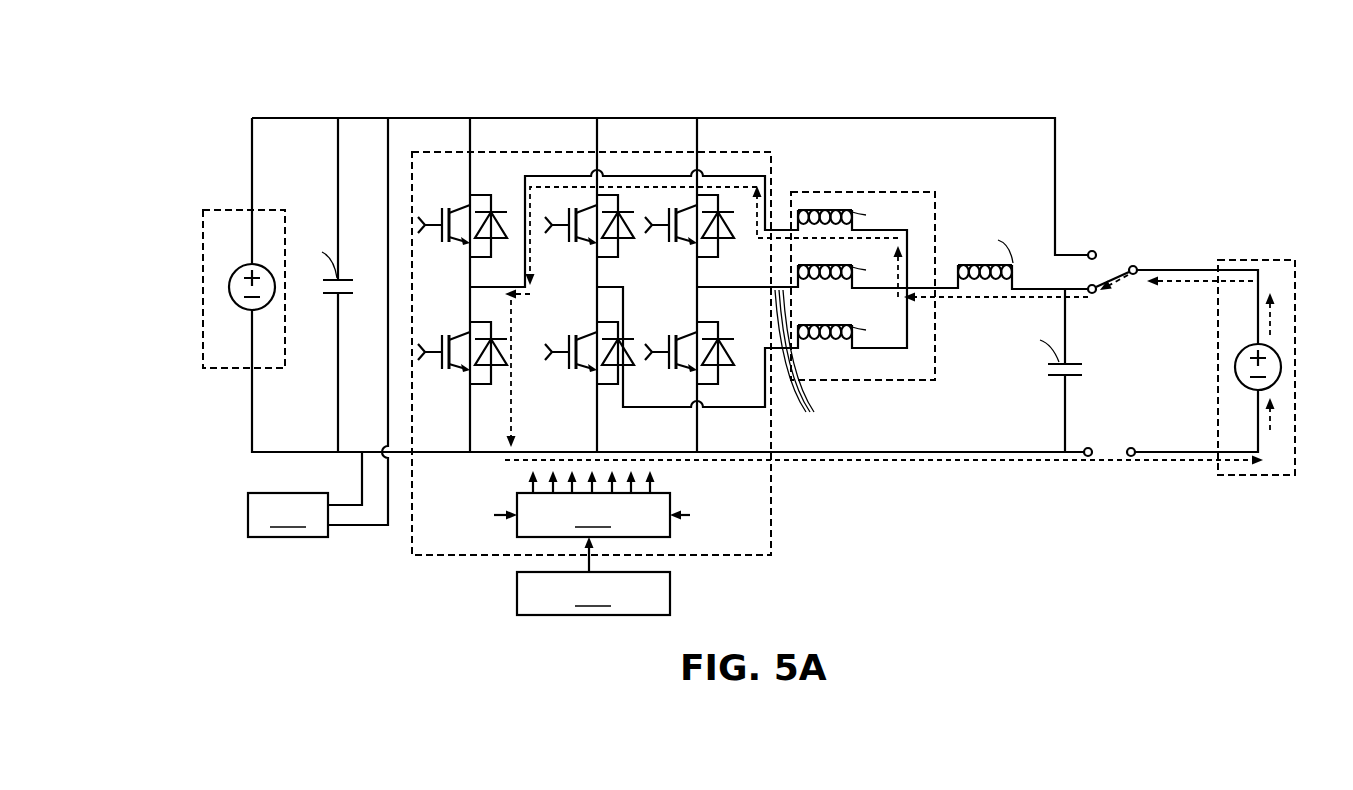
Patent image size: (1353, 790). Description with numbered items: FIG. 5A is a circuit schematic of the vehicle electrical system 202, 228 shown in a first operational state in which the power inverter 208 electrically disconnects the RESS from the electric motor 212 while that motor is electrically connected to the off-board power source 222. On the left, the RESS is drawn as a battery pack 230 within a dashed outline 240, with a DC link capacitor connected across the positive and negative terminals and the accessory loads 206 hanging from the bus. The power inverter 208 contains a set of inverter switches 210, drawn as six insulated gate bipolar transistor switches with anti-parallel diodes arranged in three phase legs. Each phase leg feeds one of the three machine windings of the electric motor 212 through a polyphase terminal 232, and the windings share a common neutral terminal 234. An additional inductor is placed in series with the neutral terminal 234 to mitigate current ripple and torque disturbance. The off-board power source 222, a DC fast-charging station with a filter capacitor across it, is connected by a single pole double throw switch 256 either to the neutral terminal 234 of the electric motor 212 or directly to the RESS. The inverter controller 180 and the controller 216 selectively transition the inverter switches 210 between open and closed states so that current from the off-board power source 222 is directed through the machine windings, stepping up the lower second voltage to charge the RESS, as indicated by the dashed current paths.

The vehicle electrical system 202 is at (737, 337).
The inverter-based motor drive / charger circuit 228 is at (374, 96).
The DC input source block 240 is at (203, 223).
The battery pack 230 is at (239, 275).
The accessory loads 206 is at (288, 515).
The power inverter 208 is at (770, 164).
The electric motor 212 is at (917, 190).
The neutral terminal 234 is at (937, 288).
The polyphase terminal 232 is at (816, 357).
The single pole double throw switch 256 is at (1095, 251).
The off-board power source 222 is at (1246, 258).
The set of inverter switches 210 is at (681, 471).
The inverter controller 180 is at (593, 515).
The controller 216 is at (593, 593).